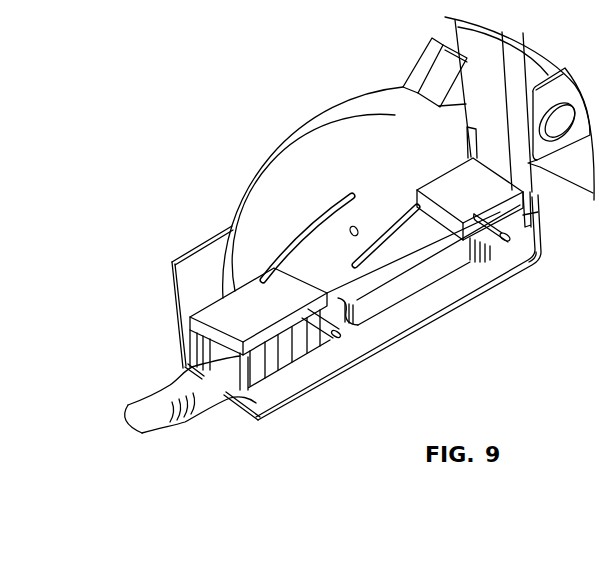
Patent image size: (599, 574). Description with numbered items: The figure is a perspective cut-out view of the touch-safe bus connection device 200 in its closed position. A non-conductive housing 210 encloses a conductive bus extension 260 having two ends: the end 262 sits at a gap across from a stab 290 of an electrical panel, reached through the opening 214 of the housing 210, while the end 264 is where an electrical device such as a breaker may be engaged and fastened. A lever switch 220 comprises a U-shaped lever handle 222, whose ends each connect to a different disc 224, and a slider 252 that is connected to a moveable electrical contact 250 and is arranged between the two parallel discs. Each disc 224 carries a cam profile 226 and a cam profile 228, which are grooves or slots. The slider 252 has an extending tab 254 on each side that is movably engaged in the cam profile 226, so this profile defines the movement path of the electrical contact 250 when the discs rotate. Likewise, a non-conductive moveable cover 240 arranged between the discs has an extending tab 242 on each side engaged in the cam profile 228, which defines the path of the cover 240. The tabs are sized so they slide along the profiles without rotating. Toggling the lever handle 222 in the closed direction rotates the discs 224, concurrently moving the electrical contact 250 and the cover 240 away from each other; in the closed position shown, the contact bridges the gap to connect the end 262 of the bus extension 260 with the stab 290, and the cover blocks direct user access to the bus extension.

The touch-safe bus connection device 200 is at (202, 53).
The non-conductive housing 210 is at (205, 237).
The opening 214 is at (181, 346).
The lever switch 220 is at (305, 96).
The lever handle 222 is at (426, 58).
The disc 224 is at (283, 151).
The cam profile 226 is at (312, 220).
The cam profile 228 is at (482, 248).
The moveable cover 240 is at (445, 180).
The extending tab 242 is at (521, 242).
The moveable electrical contact 250 is at (258, 367).
The slider 252 is at (223, 318).
The extending tab 254 is at (338, 336).
The conductive bus extension 260 is at (426, 272).
The end 262 is at (350, 323).
The end 264 is at (508, 268).
The stab 290 is at (166, 420).